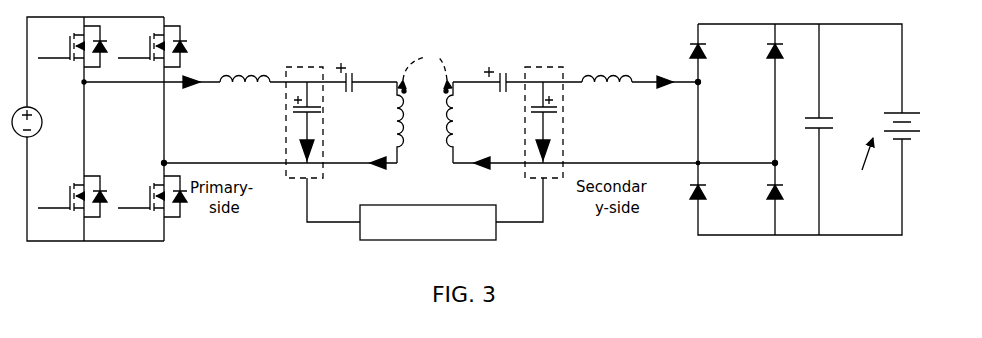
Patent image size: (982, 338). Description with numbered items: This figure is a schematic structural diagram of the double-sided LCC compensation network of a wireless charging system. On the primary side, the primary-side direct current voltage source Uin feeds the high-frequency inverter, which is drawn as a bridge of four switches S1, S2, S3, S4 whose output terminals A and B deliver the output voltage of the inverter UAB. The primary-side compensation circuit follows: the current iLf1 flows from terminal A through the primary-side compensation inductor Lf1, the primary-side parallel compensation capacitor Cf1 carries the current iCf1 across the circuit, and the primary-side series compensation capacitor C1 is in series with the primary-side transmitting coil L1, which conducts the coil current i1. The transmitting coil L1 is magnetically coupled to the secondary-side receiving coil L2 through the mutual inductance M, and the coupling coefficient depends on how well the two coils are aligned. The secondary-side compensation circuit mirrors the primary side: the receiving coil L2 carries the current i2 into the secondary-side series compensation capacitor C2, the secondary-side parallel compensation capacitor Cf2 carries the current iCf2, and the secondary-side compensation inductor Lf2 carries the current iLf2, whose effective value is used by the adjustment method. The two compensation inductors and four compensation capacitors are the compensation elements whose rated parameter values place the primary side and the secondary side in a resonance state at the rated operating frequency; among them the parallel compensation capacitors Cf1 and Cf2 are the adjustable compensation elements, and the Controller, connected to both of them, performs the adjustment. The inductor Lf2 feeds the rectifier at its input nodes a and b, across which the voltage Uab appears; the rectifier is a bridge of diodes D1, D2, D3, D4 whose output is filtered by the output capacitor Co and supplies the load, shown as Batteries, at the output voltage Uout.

The primary-side direct current voltage source Uin is at (88, 129).
The primary inverter switch S1 is at (72, 46).
The primary inverter switch S2 is at (72, 196).
The primary inverter switch S3 is at (152, 46).
The primary inverter switch S4 is at (152, 196).
The inverter output node A is at (138, 83).
The inverter output node B is at (268, 165).
The output voltage of the inverter UAB is at (139, 130).
The primary filter inductor current iLf1 is at (187, 93).
The primary-side compensation inductor Lf1 is at (245, 67).
The primary-side parallel compensation capacitor Cf1 is at (283, 122).
The primary filter capacitor current iCf1 is at (323, 148).
The primary-side series compensation capacitor C1 is at (357, 74).
The primary-side transmitting coil L1 is at (390, 122).
The primary coil current i1 is at (378, 175).
The mutual inductance M is at (425, 60).
The secondary-side receiving coil L2 is at (457, 122).
The secondary coil current i2 is at (481, 175).
The secondary-side series compensation capacitor C2 is at (483, 73).
The secondary-side parallel compensation capacitor Cf2 is at (556, 122).
The secondary filter capacitor current iCf2 is at (520, 147).
The controller Controller is at (428, 222).
The secondary-side compensation inductor Lf2 is at (607, 67).
The real-time current of the secondary-side compensation inductor iLf2 is at (661, 93).
The rectifier input node a is at (706, 81).
The rectifier input node b is at (744, 165).
The rectifier input voltage Uab is at (722, 123).
The rectifier diode D1 is at (685, 51).
The rectifier diode D2 is at (684, 194).
The rectifier diode D3 is at (762, 51).
The rectifier diode D4 is at (762, 194).
The output filter capacitor Co is at (810, 113).
The battery load Batteries is at (876, 150).
The output voltage Uout is at (867, 93).